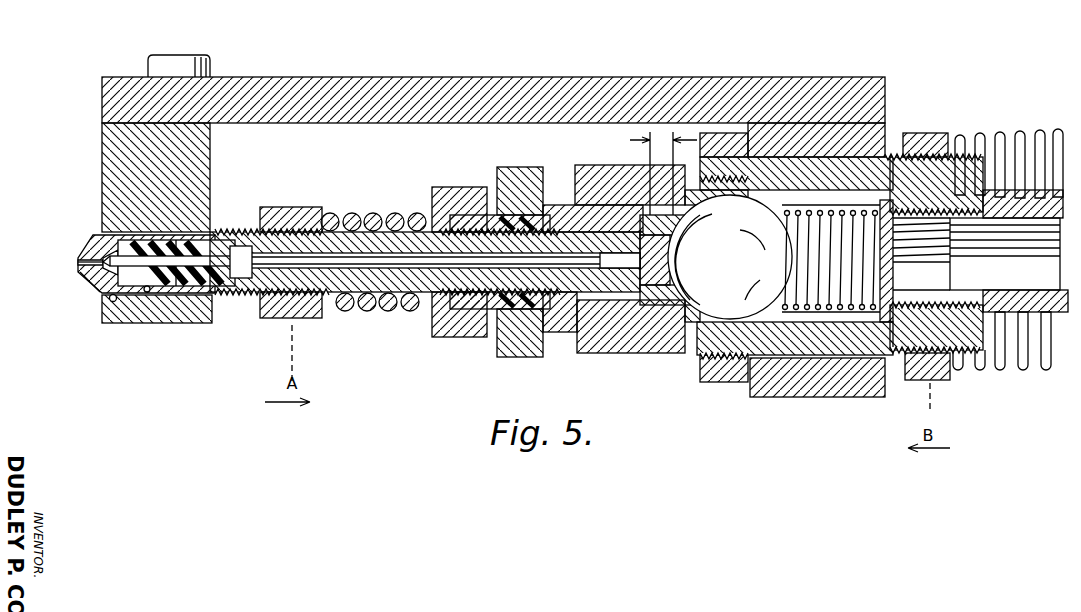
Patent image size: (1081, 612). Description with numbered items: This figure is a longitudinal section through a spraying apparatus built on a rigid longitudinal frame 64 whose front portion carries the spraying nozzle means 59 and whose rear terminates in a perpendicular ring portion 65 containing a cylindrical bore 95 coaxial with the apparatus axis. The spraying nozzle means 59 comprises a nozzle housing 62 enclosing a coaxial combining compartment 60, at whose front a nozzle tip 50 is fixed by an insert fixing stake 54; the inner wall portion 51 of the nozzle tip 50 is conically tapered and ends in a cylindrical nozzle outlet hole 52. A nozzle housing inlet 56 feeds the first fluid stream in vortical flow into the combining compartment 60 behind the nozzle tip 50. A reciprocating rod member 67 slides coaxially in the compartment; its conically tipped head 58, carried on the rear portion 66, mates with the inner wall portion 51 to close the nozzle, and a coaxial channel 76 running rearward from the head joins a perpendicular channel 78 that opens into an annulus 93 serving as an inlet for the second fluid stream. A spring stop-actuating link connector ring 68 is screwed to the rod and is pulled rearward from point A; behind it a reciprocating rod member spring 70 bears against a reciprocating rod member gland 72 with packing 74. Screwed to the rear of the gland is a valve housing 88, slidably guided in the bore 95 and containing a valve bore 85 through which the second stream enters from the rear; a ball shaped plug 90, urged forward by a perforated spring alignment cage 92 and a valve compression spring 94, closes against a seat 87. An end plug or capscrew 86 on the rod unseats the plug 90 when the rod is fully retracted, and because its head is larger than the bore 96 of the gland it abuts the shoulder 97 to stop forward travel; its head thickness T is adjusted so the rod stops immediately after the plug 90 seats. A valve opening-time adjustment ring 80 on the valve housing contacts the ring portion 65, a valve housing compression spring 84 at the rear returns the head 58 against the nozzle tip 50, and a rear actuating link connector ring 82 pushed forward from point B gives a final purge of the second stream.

The nozzle tip 50 is at (93, 247).
The inner wall portion 51 is at (97, 283).
The nozzle outlet hole 52 is at (80, 265).
The insert fixing stake 54 is at (110, 301).
The nozzle housing inlet 56 is at (147, 293).
The conically tipped head 58 is at (176, 290).
The spraying nozzle means 59 is at (76, 313).
The combining compartment 60 is at (133, 240).
The nozzle housing 62 is at (212, 176).
The rigid longitudinal frame 64 is at (383, 76).
The ring portion 65 is at (884, 396).
The rear portion of reciprocating rod member 66 is at (225, 234).
The reciprocating rod member 67 is at (249, 306).
The spring stop-actuating link connector ring 68 is at (290, 211).
The reciprocating rod member spring 70 is at (352, 306).
The reciprocating rod member gland 72 is at (484, 172).
The packing 74 is at (520, 300).
The coaxial channel 76 is at (417, 266).
The channel 78 is at (570, 296).
The valve opening-time adjustment ring 80 is at (722, 350).
The rear actuating link connector ring 82 is at (922, 155).
The valve housing compression spring 84 is at (998, 145).
The valve bore 85 is at (1052, 283).
The end plug or capscrew 86 is at (660, 300).
The seat 87 is at (686, 208).
The valve housing 88 is at (697, 328).
The ball shaped plug 90 is at (708, 308).
The perforated spring alignment cage 92 is at (790, 320).
The annulus 93 is at (593, 316).
The valve compression spring 94 is at (848, 322).
The cylindrical bore 95 is at (815, 312).
The bore 96 is at (615, 302).
The shoulder 97 is at (640, 204).
The thickness of capscrew head T is at (663, 173).